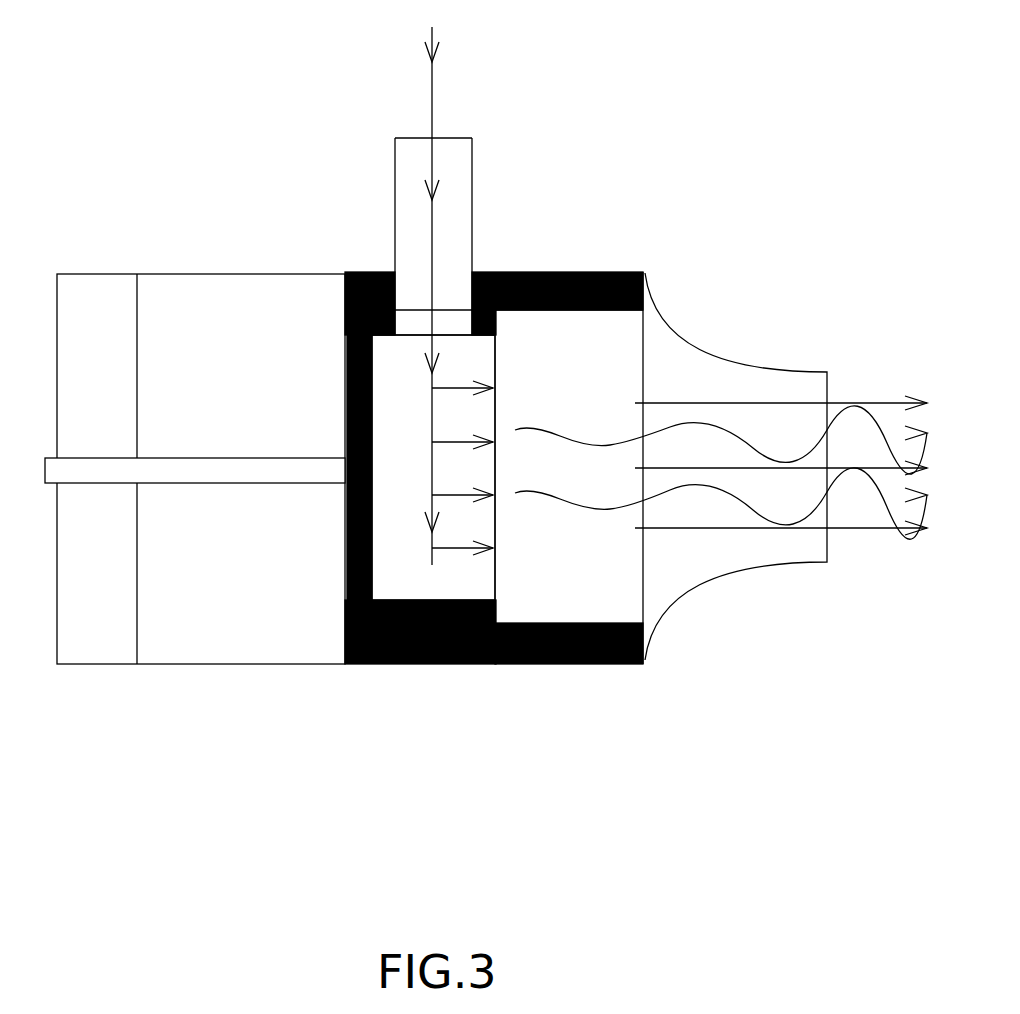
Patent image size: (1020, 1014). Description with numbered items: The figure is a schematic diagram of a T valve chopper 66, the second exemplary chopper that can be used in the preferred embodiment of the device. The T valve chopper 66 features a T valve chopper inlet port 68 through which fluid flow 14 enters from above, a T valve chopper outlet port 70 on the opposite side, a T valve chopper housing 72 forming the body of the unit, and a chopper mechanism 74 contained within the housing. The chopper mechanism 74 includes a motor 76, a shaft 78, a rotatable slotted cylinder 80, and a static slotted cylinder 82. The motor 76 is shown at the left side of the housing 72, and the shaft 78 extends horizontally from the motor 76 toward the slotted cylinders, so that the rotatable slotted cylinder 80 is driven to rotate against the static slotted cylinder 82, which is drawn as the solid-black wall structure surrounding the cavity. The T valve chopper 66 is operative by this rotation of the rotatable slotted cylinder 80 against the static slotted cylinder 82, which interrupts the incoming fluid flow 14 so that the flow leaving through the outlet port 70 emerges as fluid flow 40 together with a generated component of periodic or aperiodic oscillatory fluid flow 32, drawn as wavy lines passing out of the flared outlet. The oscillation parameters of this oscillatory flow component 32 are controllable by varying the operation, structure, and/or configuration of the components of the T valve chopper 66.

The fluid flow 14 is at (459, 296).
The component of periodic or aperiodic oscillatory fluid flow 32 is at (721, 472).
The output fluid flow 40 is at (781, 454).
The T valve chopper 66 is at (486, 420).
The T valve chopper inlet port 68 is at (450, 287).
The T valve chopper outlet port 70 is at (675, 557).
The T valve chopper housing 72 is at (268, 665).
The chopper mechanism 74 is at (241, 469).
The motor 76 is at (97, 469).
The shaft 78 is at (195, 472).
The rotatable slotted cylinder 80 is at (348, 503).
The static slotted cylinder 82 is at (345, 291).